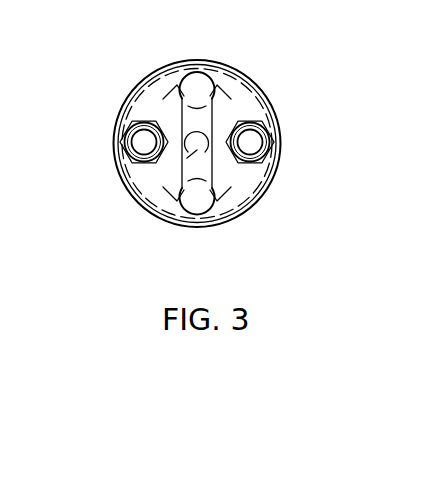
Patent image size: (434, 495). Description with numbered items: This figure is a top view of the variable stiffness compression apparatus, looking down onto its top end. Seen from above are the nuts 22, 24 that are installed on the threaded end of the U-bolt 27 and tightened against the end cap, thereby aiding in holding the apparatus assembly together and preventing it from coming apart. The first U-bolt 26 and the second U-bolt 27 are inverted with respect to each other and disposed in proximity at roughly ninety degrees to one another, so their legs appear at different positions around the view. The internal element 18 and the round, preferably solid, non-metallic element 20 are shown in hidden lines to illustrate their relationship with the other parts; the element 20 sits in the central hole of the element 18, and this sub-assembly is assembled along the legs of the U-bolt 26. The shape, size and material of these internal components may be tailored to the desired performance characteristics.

The internal element 18 is at (163, 96).
The round non-metallic element 20 is at (193, 158).
The nut 22 is at (273, 148).
The nut 24 is at (118, 122).
The first U-bolt 26 is at (215, 110).
The second U-bolt 27 is at (140, 146).